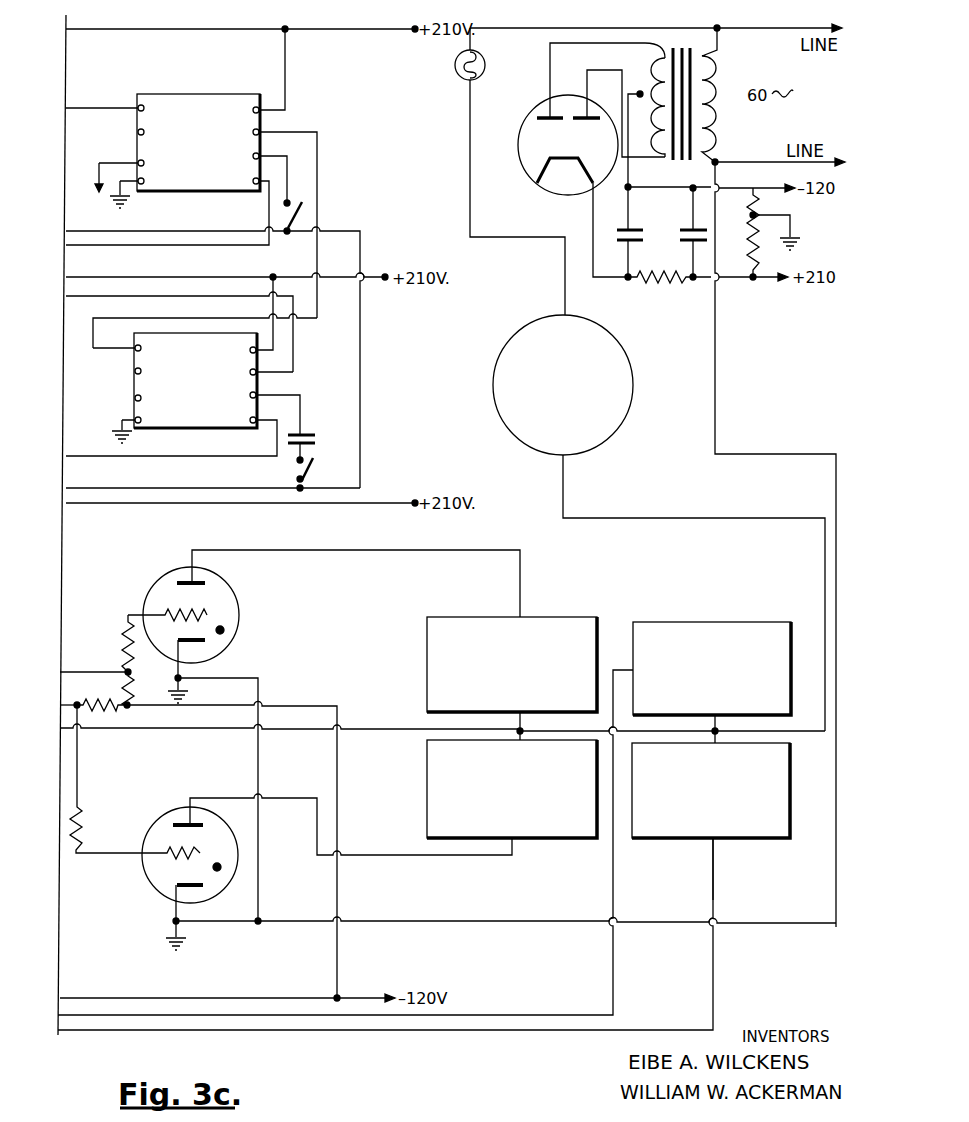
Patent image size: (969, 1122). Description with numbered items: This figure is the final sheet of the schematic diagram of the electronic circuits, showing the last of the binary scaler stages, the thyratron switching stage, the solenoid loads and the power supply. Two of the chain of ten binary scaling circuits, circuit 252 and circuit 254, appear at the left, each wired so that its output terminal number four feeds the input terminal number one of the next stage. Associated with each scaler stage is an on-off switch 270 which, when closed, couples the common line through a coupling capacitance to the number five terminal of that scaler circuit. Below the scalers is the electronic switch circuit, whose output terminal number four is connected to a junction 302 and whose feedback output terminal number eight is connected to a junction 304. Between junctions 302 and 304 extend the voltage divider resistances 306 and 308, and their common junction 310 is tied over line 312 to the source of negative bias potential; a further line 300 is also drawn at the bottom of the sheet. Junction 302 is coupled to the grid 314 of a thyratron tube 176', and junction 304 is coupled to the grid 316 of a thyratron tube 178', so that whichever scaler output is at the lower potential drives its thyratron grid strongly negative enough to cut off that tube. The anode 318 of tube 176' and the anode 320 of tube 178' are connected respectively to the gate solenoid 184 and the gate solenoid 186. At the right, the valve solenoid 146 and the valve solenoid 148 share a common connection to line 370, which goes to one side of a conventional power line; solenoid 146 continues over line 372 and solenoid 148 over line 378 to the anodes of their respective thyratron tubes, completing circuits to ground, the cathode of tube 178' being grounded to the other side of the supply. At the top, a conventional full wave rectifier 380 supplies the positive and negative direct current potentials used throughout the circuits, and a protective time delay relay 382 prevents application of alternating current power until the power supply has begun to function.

The binary scaling circuit 252 is at (155, 94).
The binary scaling circuit 254 is at (134, 383).
The on-off switch 270 is at (305, 212).
The full wave rectifier 380 is at (452, 106).
The protective time delay relay 382 is at (633, 390).
The thyratron tube 176' is at (205, 615).
The thyratron tube 178' is at (167, 842).
The grid 314 is at (155, 593).
The anode 318 is at (208, 580).
The anode 320 is at (192, 800).
The grid 316 is at (150, 830).
The junction 302 is at (125, 670).
The junction 304 is at (72, 690).
The voltage divider resistance 306 is at (131, 675).
The voltage divider resistance 308 is at (110, 712).
The common junction 310 is at (130, 710).
The line 312 is at (195, 709).
The conductor 300 is at (116, 998).
The gate solenoid 184 is at (532, 617).
The gate solenoid 186 is at (543, 840).
The valve solenoid 146 is at (708, 622).
The valve solenoid 148 is at (745, 842).
The line 370 is at (720, 734).
The line 372 is at (618, 665).
The line 378 is at (714, 897).